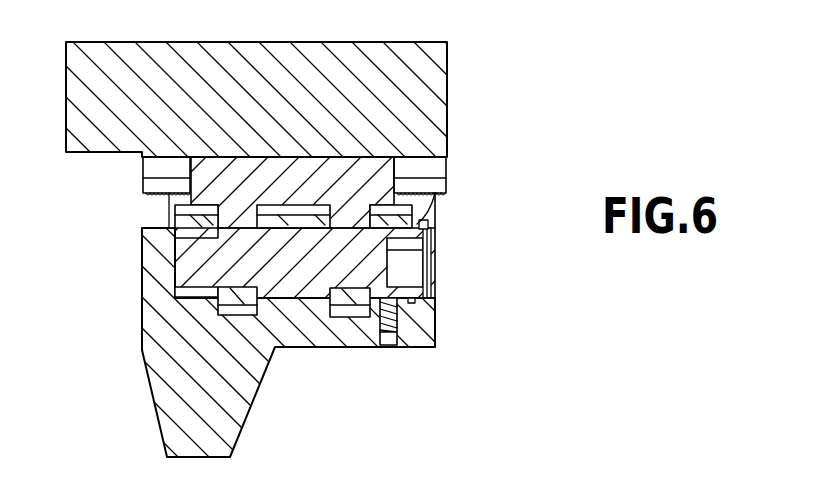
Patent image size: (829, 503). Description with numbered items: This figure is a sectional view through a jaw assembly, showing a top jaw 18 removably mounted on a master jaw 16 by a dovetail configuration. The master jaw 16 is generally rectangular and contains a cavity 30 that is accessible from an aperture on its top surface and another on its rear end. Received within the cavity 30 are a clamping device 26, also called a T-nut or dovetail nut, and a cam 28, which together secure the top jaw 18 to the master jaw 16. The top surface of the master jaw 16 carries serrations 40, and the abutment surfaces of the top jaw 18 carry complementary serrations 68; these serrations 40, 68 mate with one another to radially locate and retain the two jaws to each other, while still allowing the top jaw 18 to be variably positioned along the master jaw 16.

The top jaw 18 is at (395, 43).
The serrations 68 is at (436, 180).
The clamping device 26 is at (208, 180).
The cam 28 is at (203, 261).
The serrations 40 is at (435, 218).
The master jaw 16 is at (242, 393).
The cavity 30 is at (203, 297).